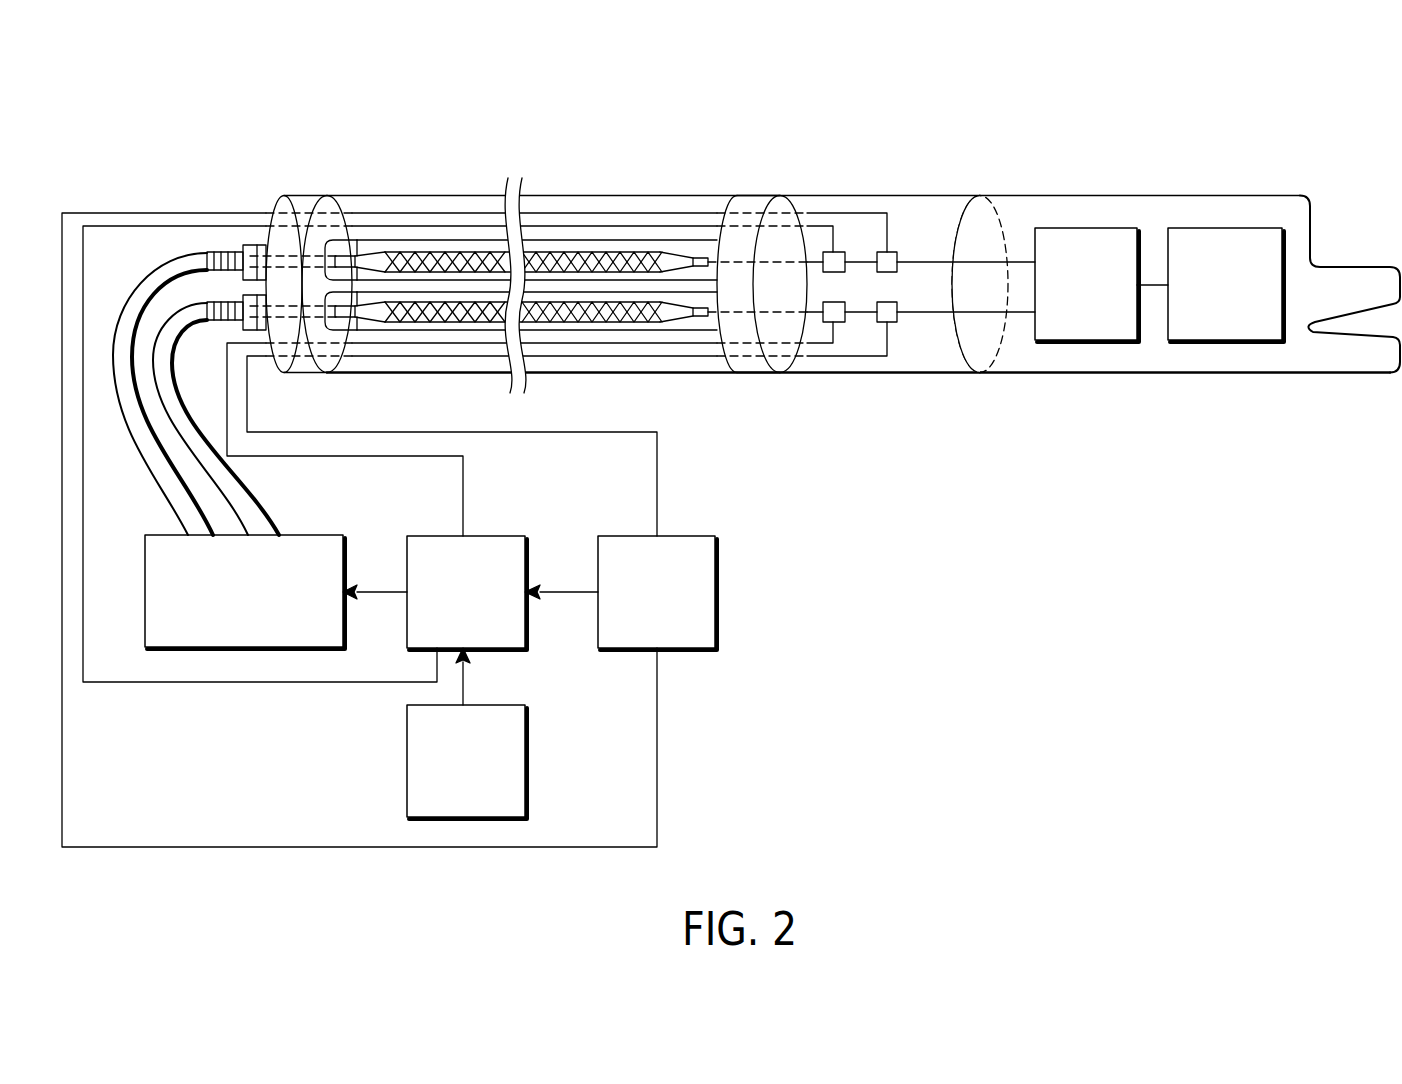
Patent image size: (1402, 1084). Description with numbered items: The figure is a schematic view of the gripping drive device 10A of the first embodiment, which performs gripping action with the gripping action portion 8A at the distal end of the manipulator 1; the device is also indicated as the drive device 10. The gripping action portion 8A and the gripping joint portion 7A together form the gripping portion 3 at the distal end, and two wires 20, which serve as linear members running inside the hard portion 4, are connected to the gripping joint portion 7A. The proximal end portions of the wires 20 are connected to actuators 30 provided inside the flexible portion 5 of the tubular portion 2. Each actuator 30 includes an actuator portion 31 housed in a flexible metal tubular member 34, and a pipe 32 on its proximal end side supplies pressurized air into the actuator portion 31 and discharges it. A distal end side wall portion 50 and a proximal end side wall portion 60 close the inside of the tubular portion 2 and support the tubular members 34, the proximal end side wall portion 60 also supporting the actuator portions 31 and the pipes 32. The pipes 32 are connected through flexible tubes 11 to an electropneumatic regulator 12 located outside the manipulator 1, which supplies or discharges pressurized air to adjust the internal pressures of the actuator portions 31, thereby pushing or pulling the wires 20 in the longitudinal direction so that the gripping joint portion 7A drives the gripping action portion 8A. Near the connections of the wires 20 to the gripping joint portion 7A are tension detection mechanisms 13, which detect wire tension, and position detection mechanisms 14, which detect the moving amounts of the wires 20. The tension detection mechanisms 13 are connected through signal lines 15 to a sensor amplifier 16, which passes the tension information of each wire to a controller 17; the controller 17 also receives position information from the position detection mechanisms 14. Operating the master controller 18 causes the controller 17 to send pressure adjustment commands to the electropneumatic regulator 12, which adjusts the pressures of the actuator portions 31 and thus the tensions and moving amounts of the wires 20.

The manipulator 1 is at (984, 160).
The tubular portion 2 is at (928, 140).
The gripping portion 3 is at (1217, 249).
The hard portion 4 is at (896, 205).
The flexible portion 5 is at (592, 203).
The gripping joint portion 7A is at (1100, 228).
The gripping action portion 8A is at (1232, 228).
The actuator 10 is at (731, 457).
The gripping drive device 10A is at (340, 143).
The tube 11 is at (180, 330).
The electropneumatic regulator 12 is at (298, 535).
The tension detection mechanism 13 is at (896, 252).
The position detection mechanism 14 is at (843, 252).
The signal line 15 is at (820, 212).
The sensor amplifier 16 is at (690, 536).
The controller 17 is at (500, 536).
The master controller 18 is at (500, 705).
The wire 20 is at (923, 313).
The actuator 30 is at (521, 286).
The actuator portion 31 is at (450, 258).
The pipe 32 is at (333, 315).
The tubular member 34 is at (450, 328).
The distal end side wall portion 50 is at (757, 360).
The proximal end side wall portion 60 is at (302, 372).